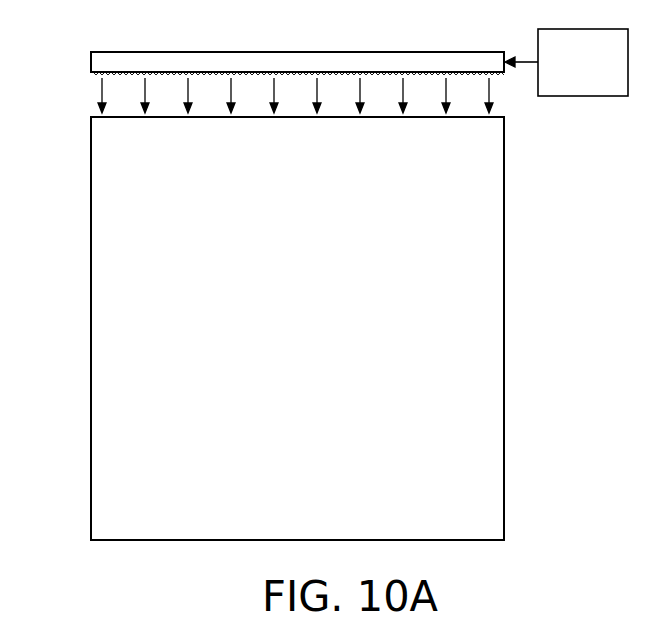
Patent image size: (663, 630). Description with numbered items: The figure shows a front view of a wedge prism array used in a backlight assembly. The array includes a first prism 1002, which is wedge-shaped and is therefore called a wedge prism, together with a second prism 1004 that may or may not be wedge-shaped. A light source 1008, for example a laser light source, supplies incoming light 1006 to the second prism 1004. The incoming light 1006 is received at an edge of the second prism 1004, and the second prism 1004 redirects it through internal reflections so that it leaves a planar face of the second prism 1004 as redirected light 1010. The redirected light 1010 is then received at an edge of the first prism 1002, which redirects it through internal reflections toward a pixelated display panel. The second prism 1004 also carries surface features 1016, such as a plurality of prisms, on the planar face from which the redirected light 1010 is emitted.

The first prism 1002 is at (297, 328).
The second prism 1004 is at (146, 50).
The incoming light 1006 is at (527, 60).
The light source 1008 is at (583, 97).
The redirected light 1010 is at (90, 75).
The surface features 1016 is at (333, 76).